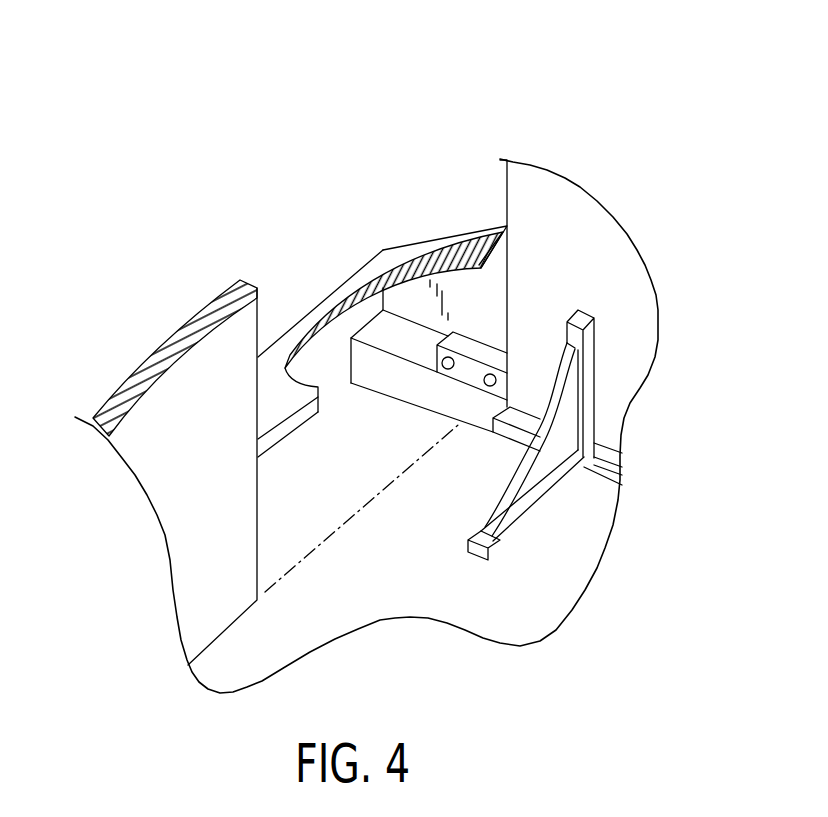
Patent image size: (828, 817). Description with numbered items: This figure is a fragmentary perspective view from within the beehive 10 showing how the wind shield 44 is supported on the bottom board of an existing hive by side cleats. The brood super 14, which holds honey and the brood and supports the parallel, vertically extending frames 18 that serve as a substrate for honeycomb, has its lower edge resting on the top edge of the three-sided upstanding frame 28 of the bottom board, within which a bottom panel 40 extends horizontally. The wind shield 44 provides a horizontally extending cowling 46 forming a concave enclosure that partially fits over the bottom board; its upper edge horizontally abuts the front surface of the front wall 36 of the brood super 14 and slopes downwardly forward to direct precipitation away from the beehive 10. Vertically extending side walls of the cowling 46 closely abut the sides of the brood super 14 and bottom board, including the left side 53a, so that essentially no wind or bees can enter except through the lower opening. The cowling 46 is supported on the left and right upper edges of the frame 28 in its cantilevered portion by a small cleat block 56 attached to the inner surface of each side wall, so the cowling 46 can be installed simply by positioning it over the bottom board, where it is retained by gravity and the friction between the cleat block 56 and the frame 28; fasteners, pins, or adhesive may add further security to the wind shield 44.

The beehive 10 is at (229, 76).
The brood super 14 is at (114, 368).
The frame 18 is at (594, 338).
The upstanding frame 28 is at (410, 375).
The front wall 36 is at (178, 328).
The bottom panel 40 is at (470, 607).
The wind shield 44 is at (368, 248).
The cowling 46 is at (463, 238).
The left side of the brood super 53a is at (597, 237).
The cleat block 56 is at (491, 347).